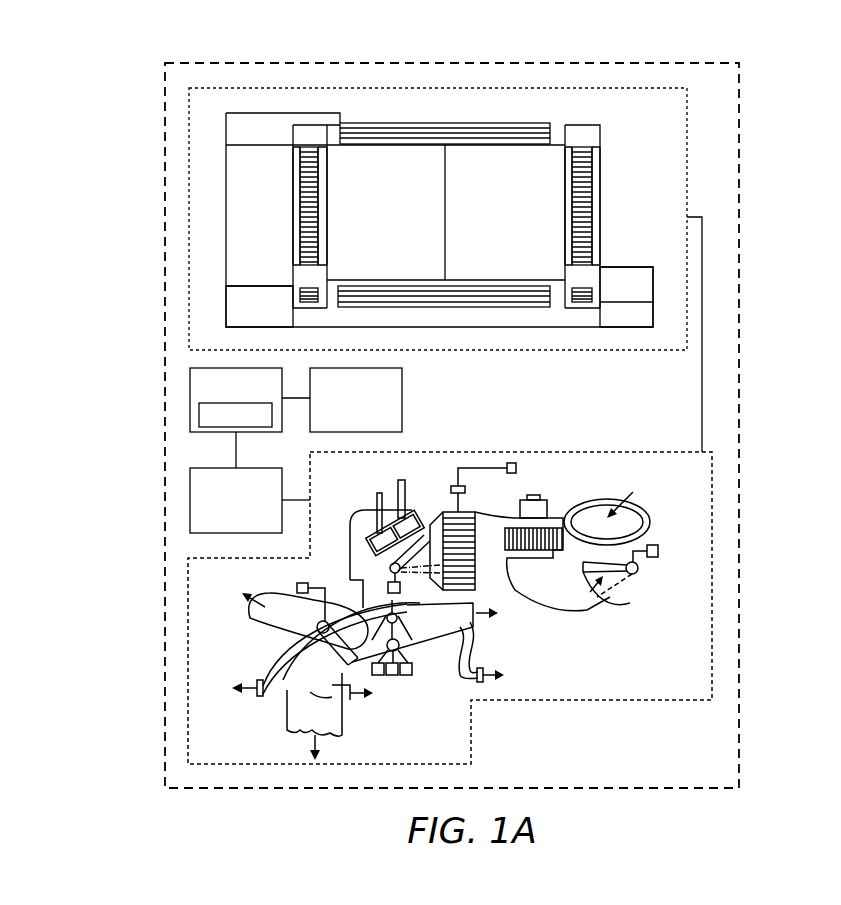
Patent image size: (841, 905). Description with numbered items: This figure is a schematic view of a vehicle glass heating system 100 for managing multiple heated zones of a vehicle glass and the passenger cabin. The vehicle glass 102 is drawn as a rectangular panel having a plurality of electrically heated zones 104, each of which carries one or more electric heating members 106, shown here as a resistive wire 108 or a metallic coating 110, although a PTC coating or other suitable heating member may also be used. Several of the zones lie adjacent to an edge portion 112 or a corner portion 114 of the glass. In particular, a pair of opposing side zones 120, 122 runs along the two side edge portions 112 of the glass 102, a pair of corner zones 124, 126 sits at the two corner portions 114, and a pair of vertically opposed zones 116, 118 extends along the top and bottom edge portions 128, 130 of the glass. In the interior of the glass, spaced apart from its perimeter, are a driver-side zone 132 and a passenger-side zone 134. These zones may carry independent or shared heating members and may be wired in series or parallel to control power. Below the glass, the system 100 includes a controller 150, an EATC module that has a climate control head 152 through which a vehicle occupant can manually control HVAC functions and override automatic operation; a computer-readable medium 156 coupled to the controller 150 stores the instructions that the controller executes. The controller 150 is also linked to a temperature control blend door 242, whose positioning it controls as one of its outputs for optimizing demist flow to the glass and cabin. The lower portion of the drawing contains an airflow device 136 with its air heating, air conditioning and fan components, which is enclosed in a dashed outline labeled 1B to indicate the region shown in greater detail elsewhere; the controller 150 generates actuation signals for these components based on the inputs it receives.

The vehicle glass heating system 100 is at (156, 74).
The vehicle glass 102 is at (222, 108).
The electrically heated zones 104 is at (387, 173).
The electric heating members 106 is at (533, 123).
The resistive wire 108 is at (530, 177).
The metallic coating 110 is at (412, 157).
The edge portion 112 is at (423, 123).
The corner portion 114 is at (300, 327).
The vertically opposed zone 116 is at (293, 227).
The vertically opposed zone 118 is at (600, 177).
The side zone 120 is at (297, 237).
The side zone 122 is at (600, 157).
The corner zone 124 is at (293, 305).
The corner zone 126 is at (653, 290).
The top edge portion 128 is at (436, 307).
The bottom edge portion 130 is at (347, 123).
The driver-side zone 132 is at (374, 217).
The passenger-side zone 134 is at (486, 217).
The airflow device 136 is at (182, 670).
The controller 150 is at (190, 400).
The climate control head 152 is at (402, 408).
The computer-readable medium 156 is at (190, 420).
The temperature control blend door 242 is at (190, 510).
The region shown in FIG. 1B is at (712, 482).